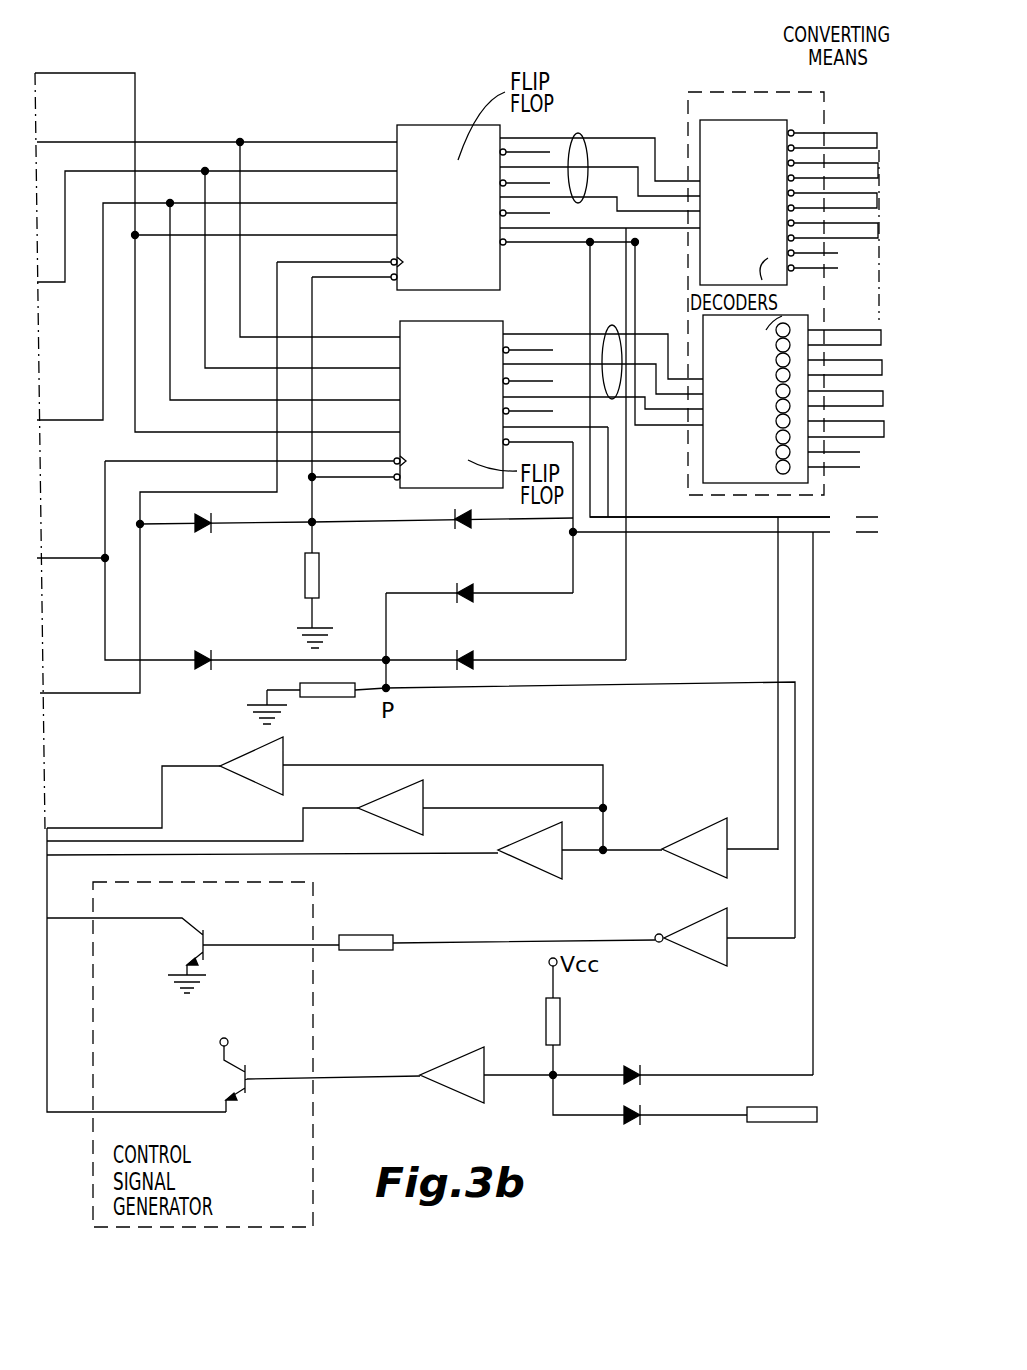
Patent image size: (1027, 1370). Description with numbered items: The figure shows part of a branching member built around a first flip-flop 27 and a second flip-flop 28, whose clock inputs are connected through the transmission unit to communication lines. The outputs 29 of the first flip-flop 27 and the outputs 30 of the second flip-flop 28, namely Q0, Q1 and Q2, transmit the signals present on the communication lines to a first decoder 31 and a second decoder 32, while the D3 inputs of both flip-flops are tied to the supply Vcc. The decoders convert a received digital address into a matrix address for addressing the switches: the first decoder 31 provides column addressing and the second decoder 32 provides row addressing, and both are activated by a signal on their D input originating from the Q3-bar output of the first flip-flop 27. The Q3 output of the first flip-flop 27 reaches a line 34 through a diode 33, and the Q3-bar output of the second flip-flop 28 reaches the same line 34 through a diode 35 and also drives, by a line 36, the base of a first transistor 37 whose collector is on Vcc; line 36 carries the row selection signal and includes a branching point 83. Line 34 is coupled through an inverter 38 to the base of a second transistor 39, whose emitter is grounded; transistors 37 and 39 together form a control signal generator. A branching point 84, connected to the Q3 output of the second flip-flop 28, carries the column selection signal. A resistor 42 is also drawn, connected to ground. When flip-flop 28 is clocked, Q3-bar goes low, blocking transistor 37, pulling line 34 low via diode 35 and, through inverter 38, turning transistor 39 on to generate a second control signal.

The first flip-flop 27 is at (440, 122).
The second flip-flop 28 is at (500, 320).
The outputs of the first flip-flop 29 is at (578, 133).
The outputs of the second flip-flop 30 is at (610, 326).
The first decoder 31 is at (745, 120).
The second decoder 32 is at (780, 318).
The diode 33 is at (473, 655).
The line 34 is at (682, 680).
The diode 35 is at (473, 590).
The line 36 is at (813, 832).
The first transistor 37 is at (247, 1088).
The inverter 38 is at (727, 955).
The second transistor 39 is at (205, 950).
The resistor 42 is at (365, 525).
The branching point 83 is at (725, 537).
The branching point 84 is at (734, 677).